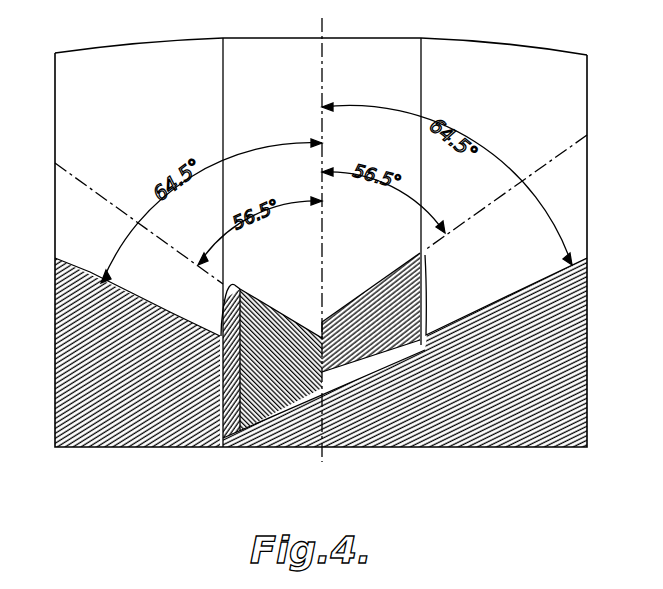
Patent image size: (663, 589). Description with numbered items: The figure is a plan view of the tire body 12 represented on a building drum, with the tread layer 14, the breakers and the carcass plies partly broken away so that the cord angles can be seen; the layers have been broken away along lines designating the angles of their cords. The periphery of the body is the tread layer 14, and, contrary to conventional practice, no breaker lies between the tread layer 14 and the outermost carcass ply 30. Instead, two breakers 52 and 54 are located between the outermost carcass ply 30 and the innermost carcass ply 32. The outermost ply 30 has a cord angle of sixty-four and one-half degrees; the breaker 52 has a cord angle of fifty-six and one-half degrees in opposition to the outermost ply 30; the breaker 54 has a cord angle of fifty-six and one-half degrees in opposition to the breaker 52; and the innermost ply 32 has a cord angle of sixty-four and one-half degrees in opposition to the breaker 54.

The tire body 12 is at (393, 28).
The tread layer 14 is at (412, 91).
The outermost carcass ply 30 is at (575, 370).
The innermost carcass ply 32 is at (78, 349).
The breaker 52 is at (279, 339).
The breaker 54 is at (236, 296).